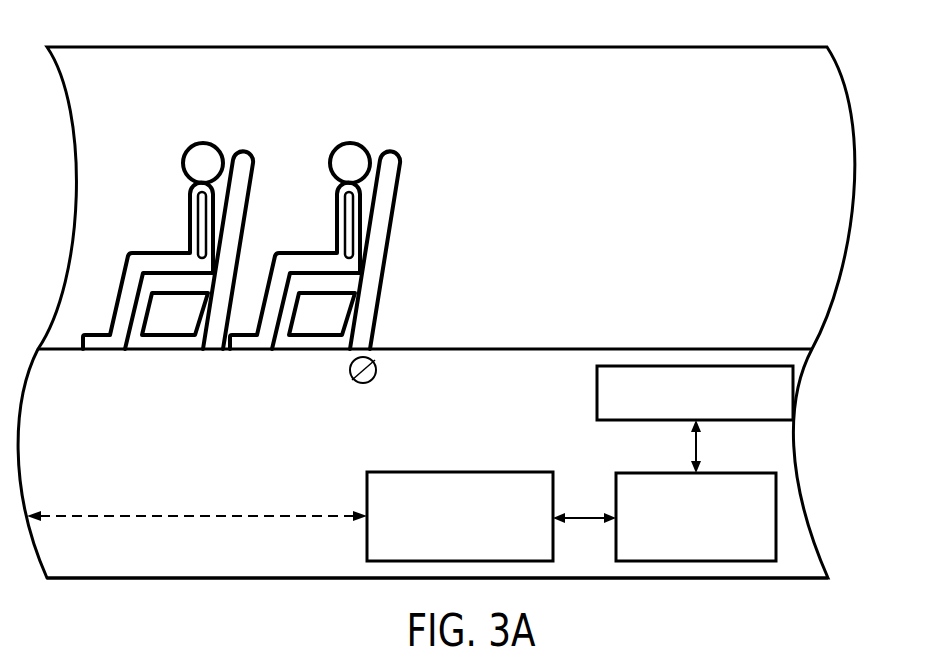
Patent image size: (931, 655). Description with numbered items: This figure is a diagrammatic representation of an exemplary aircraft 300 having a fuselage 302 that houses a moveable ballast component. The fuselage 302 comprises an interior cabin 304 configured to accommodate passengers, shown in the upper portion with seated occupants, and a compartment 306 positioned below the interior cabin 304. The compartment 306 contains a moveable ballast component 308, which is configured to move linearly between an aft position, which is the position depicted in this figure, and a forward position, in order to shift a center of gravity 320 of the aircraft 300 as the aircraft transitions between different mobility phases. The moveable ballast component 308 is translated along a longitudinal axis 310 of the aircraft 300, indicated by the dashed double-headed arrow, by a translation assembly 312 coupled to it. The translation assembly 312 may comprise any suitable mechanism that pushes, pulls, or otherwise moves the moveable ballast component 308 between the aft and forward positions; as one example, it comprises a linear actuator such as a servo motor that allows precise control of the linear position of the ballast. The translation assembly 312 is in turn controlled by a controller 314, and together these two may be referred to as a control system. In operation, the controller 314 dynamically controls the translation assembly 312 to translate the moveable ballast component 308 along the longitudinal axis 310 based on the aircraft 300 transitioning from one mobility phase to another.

The aircraft 300 is at (436, 290).
The fuselage 302 is at (287, 47).
The interior cabin 304 is at (518, 252).
The compartment 306 is at (245, 439).
The moveable ballast component 308 is at (541, 542).
The longitudinal axis 310 is at (57, 516).
The translation assembly 312 is at (766, 541).
The controller 314 is at (781, 403).
The center of gravity 320 is at (352, 381).